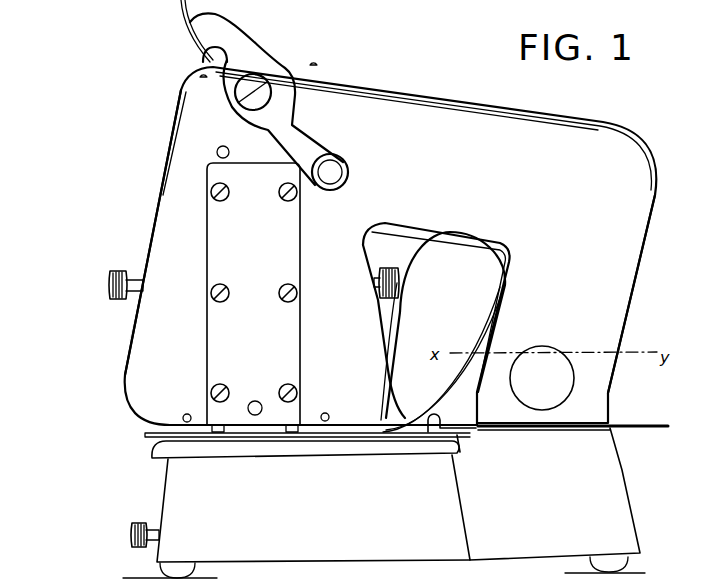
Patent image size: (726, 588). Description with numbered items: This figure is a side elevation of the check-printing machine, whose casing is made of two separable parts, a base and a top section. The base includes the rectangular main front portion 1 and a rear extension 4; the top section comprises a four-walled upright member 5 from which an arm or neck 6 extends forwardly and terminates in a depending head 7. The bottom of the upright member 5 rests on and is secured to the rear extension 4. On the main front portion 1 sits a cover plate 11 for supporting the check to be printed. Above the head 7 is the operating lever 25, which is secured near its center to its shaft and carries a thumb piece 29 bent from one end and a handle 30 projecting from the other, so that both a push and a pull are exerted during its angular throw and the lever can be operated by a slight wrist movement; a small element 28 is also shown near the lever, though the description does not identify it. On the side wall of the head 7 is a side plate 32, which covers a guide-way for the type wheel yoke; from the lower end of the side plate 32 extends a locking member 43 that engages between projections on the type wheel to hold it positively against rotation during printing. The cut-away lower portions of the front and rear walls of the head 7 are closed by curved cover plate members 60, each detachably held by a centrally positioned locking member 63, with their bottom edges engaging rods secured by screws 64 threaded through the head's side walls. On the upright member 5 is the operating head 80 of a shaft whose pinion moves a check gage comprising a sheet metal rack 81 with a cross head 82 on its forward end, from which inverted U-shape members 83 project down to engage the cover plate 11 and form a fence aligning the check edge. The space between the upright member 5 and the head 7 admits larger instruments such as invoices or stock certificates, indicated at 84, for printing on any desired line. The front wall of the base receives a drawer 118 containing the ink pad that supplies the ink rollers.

The main front portion 1 is at (296, 509).
The rear extension 4 is at (548, 500).
The upright member 5 is at (616, 294).
The arm or neck 6 is at (391, 244).
The depending head 7 is at (154, 232).
The cover plate 11 is at (298, 449).
The lever 25 is at (243, 48).
The pin 28 is at (217, 149).
The thumb piece 29 is at (183, 14).
The handle 30 is at (348, 152).
The side plate 32 is at (293, 260).
The locking member 43 is at (254, 401).
The cover plate member 60 is at (126, 337).
The locking member 63 is at (116, 268).
The screw 64 is at (185, 414).
The operating head 80 is at (542, 378).
The sheet metal rack 81 is at (628, 429).
The cross head 82 is at (461, 438).
The inverted U-shape member 83 is at (439, 420).
The instrument 84 is at (453, 388).
The drawer 118 is at (156, 517).